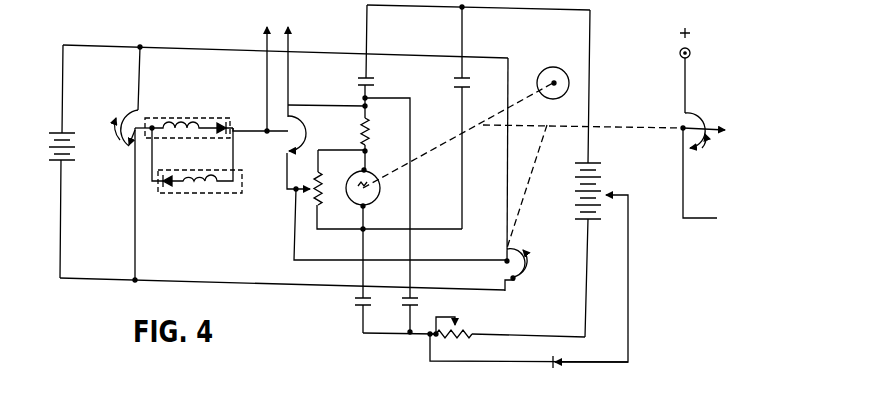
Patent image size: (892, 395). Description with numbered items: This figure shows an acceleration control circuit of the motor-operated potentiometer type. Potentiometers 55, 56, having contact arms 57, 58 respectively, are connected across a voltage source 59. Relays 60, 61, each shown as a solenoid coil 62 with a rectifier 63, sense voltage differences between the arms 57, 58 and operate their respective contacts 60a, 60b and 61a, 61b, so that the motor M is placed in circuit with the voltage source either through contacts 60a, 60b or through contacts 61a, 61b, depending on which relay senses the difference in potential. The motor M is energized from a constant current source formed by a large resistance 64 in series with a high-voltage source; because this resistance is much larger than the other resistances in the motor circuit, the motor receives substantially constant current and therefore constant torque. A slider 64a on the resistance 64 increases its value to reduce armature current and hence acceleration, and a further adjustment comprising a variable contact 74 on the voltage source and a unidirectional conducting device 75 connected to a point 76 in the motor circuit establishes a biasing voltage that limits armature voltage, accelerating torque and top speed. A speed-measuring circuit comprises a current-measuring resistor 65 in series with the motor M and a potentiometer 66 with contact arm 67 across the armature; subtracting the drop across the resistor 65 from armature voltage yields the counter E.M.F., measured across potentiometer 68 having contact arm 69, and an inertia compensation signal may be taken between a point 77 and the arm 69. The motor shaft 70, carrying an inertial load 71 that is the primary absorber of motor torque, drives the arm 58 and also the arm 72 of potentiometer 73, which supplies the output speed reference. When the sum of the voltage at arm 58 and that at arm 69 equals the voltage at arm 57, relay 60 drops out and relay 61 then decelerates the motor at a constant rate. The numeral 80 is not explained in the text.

The potentiometer 55 is at (125, 105).
The potentiometer 56 is at (527, 274).
The contact arm 57 is at (128, 146).
The contact arm 58 is at (514, 286).
The voltage source 59 is at (60, 132).
The relay 60 is at (197, 118).
The relay 61 is at (195, 193).
The solenoid coil 62 is at (172, 122).
The rectifier 63 is at (225, 123).
The contact 60a is at (373, 81).
The contact 61a is at (471, 82).
The contact 60b is at (354, 305).
The contact 61b is at (418, 304).
The resistance 64 is at (474, 340).
The slider 64a is at (457, 320).
The current-measuring resistor 65 is at (371, 139).
The potentiometer 66 is at (322, 204).
The contact arm 67 is at (296, 192).
The potentiometer 68 is at (305, 135).
The contact arm 69 is at (298, 155).
The motor shaft 70 is at (478, 133).
The inertial load 71 is at (561, 63).
The arm 72 is at (683, 141).
The potentiometer 73 is at (691, 115).
The variable contact 74 is at (600, 168).
The unidirectional conducting device 75 is at (553, 368).
The point 76 is at (426, 336).
The point 77 is at (288, 100).
The motor M is at (363, 189).
The reference numeral 80 is at (196, 390).